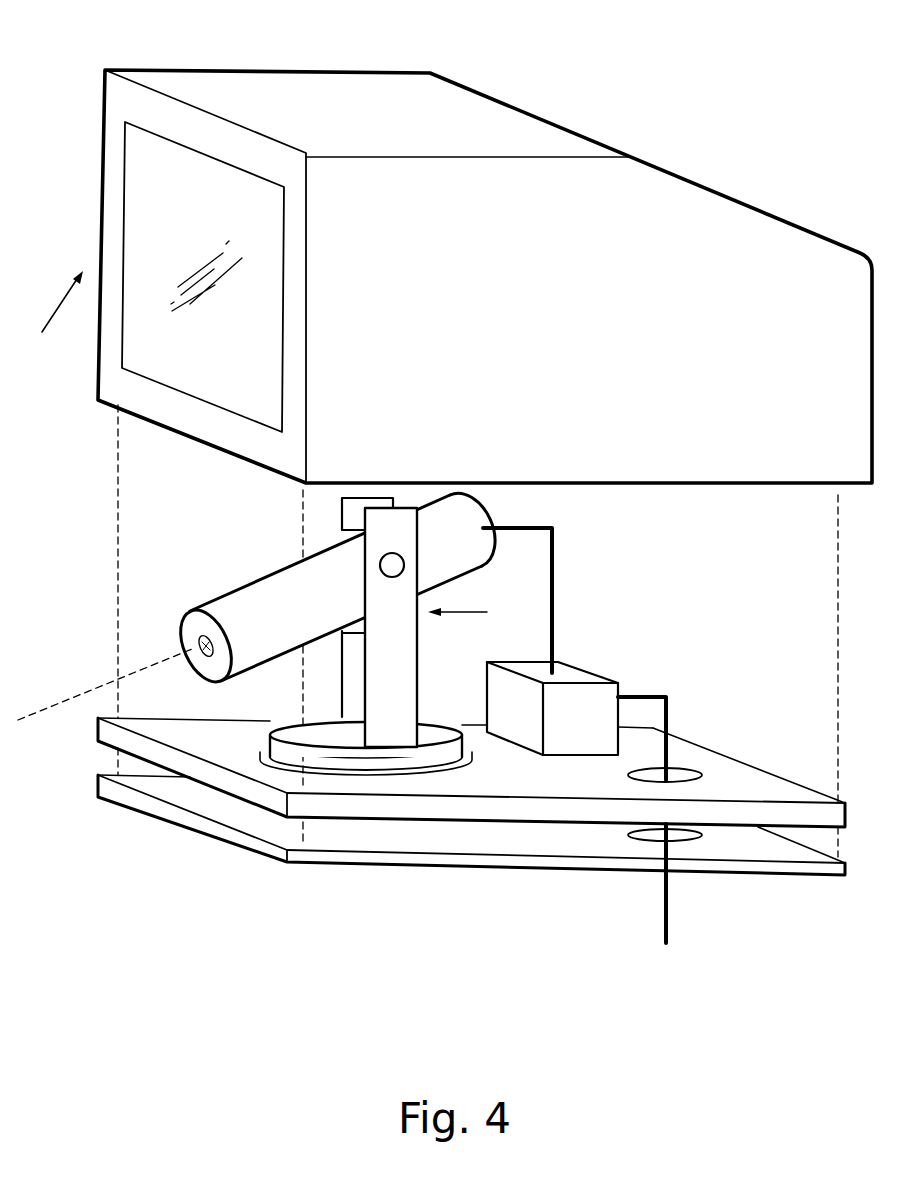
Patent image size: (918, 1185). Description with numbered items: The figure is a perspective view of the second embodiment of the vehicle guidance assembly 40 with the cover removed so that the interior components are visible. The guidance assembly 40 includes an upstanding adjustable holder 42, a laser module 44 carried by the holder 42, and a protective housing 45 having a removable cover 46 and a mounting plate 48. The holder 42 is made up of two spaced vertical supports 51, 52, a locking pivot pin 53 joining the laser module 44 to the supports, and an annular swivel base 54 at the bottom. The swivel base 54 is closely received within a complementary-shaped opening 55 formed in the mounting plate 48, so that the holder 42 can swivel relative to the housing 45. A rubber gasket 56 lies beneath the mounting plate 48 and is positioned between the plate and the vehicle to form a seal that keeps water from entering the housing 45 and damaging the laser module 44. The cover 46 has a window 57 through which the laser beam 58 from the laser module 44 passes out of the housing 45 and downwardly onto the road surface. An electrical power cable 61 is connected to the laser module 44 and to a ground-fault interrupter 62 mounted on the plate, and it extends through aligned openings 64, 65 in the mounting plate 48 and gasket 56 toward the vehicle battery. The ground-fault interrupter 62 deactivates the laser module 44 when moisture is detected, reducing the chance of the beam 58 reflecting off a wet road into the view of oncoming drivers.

The guidance assembly 40 is at (476, 834).
The upstanding adjustable holder 42 is at (476, 614).
The laser module 44 is at (283, 560).
The protective housing 45 is at (50, 317).
The removable cover 46 is at (447, 130).
The mounting plate 48 is at (339, 843).
The vertical support 51 is at (398, 705).
The vertical support 52 is at (347, 512).
The locking pivot pin 53 is at (404, 555).
The annular swivel base 54 is at (280, 752).
The opening 55 is at (328, 773).
The rubber gasket 56 is at (468, 870).
The window 57 is at (202, 187).
The laser beam 58 is at (145, 667).
The electrical power cable 61 is at (557, 568).
The ground-fault interrupter 62 is at (587, 703).
The opening 64 is at (690, 768).
The opening 65 is at (700, 838).